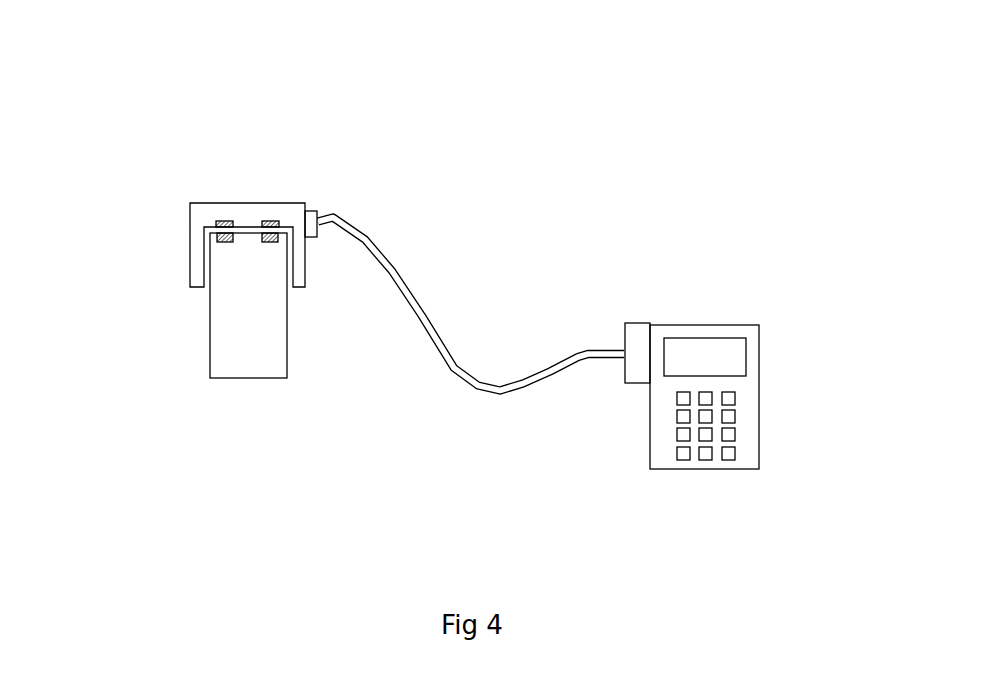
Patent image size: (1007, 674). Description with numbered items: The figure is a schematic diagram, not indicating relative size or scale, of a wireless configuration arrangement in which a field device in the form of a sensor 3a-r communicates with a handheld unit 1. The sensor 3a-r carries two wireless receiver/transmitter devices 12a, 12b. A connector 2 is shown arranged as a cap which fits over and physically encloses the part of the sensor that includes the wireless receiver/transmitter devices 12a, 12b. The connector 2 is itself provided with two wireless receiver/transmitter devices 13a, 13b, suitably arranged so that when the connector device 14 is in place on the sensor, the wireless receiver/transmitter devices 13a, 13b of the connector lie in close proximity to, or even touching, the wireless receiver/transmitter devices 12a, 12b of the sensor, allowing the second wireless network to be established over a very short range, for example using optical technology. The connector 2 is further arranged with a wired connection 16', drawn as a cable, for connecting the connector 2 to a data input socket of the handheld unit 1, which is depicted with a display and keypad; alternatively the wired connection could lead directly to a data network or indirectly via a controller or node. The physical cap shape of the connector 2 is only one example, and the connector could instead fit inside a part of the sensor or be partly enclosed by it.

The handheld unit 1 is at (750, 385).
The connector device 2 is at (175, 238).
The sensor 3a-r is at (225, 363).
The wireless receiver/transmitter device 12a is at (218, 245).
The wireless receiver/transmitter device 12b is at (266, 245).
The wireless receiver/transmitter device 13a is at (217, 222).
The wireless receiver/transmitter device 13b is at (259, 222).
The connector device 14 is at (625, 383).
The wired connection 16' is at (543, 239).